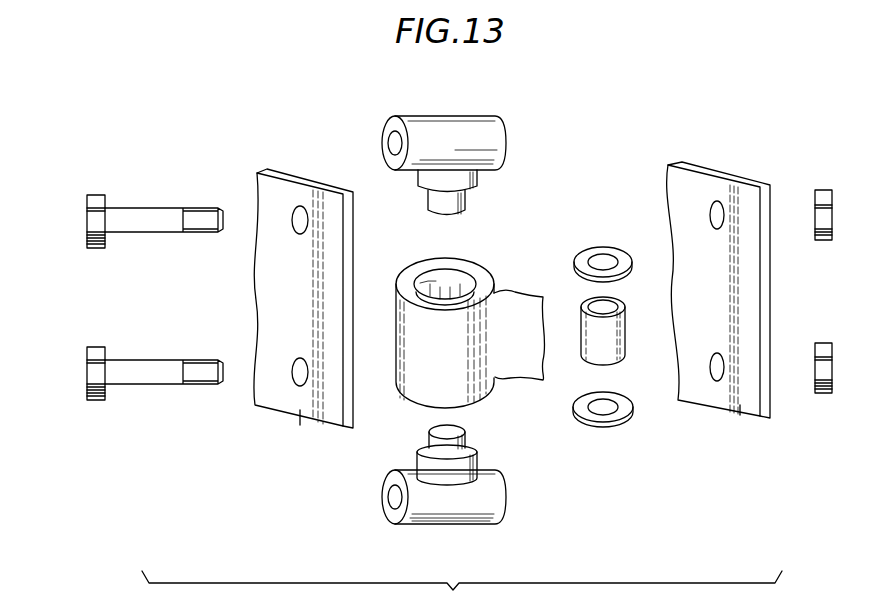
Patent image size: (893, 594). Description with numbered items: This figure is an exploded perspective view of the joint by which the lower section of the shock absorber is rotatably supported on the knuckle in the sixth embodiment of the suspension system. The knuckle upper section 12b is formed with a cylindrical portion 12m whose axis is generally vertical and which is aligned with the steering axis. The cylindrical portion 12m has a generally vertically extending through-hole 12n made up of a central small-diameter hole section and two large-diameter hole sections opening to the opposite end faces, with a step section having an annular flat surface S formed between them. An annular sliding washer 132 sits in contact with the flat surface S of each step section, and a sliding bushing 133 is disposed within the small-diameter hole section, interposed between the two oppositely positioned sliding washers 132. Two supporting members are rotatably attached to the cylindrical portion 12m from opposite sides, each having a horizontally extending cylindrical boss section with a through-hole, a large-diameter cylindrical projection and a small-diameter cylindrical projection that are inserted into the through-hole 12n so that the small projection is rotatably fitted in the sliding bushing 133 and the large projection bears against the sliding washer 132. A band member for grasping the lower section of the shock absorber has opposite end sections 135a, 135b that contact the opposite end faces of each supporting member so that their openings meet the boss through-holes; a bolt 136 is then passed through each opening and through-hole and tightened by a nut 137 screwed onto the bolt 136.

The knuckle upper section 12b is at (513, 292).
The cylindrical portion 12m is at (452, 318).
The through-hole 12n is at (455, 288).
The annular flat surface S is at (420, 283).
The sliding washer 132 is at (601, 249).
The sliding bushing 133 is at (618, 338).
The band member end section 135a is at (313, 427).
The band member end section 135b is at (740, 420).
The bolt 136 is at (160, 208).
The nut 137 is at (823, 240).